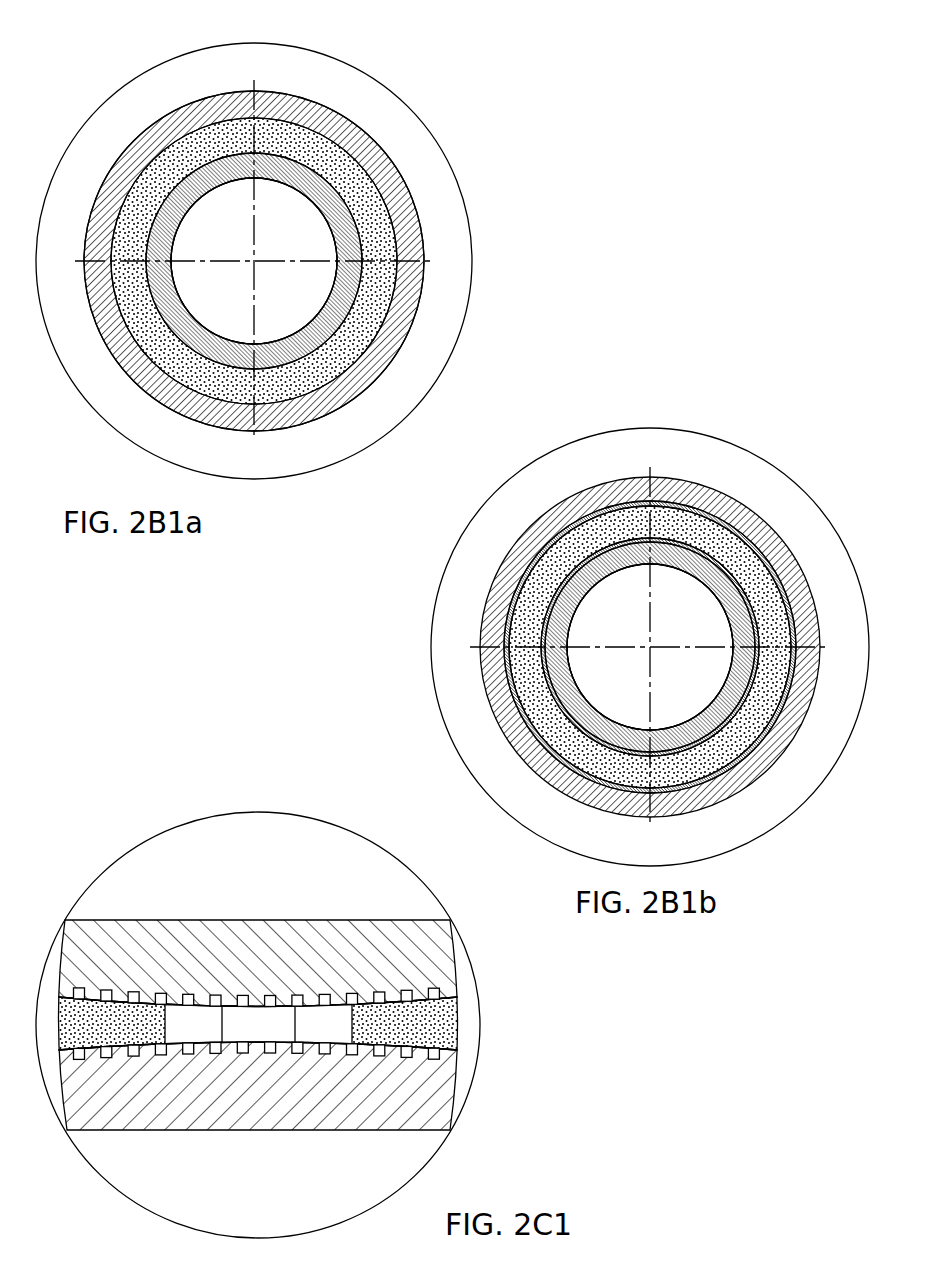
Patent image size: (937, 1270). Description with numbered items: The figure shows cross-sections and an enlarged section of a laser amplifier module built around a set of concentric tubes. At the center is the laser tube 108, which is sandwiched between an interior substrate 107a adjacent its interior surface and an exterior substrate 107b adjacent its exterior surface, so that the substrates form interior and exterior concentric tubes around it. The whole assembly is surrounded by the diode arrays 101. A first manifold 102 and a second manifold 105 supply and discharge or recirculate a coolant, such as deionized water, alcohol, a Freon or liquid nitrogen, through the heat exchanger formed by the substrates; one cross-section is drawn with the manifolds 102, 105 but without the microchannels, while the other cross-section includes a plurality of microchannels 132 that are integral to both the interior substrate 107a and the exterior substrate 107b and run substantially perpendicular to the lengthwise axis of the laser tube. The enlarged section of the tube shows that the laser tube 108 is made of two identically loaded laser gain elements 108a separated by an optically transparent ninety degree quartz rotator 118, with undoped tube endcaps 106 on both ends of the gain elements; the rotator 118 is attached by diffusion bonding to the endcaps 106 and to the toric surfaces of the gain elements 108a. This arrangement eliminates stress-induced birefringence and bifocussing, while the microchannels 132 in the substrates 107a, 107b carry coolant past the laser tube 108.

In FIG. 2B1a, the diode arrays 101 is at (143, 77).
In FIG. 2B1b, the diode arrays 101 is at (537, 457).
In FIG. 2B1a, the first manifold 102 is at (263, 398).
In FIG. 2B1b, the first manifold 102 is at (638, 567).
In FIG. 2B1a, the second manifold 105 is at (280, 356).
In FIG. 2B1b, the second manifold 105 is at (650, 647).
In FIG. 2C1, the undoped tube endcaps 106 is at (323, 988).
In FIG. 2B1a, the interior substrate 107a is at (278, 155).
In FIG. 2B1b, the interior substrate 107a is at (633, 542).
In FIG. 2C1, the interior substrate 107a is at (360, 940).
In FIG. 2B1a, the exterior substrate 107b is at (220, 92).
In FIG. 2B1b, the exterior substrate 107b is at (597, 478).
In FIG. 2C1, the exterior substrate 107b is at (358, 1120).
In FIG. 2B1a, the laser tube 108 is at (332, 133).
In FIG. 2B1b, the laser tube 108 is at (713, 500).
In FIG. 2C1, the laser tube 108 is at (122, 1008).
In FIG. 2B1a, the laser gain elements 108a is at (397, 168).
In FIG. 2C1, the laser gain elements 108a is at (58, 1037).
In FIG. 2C1, the quartz rotator 118 is at (245, 1020).
In FIG. 2B1b, the microchannels 132 is at (547, 512).
In FIG. 2C1, the microchannels 132 is at (410, 982).